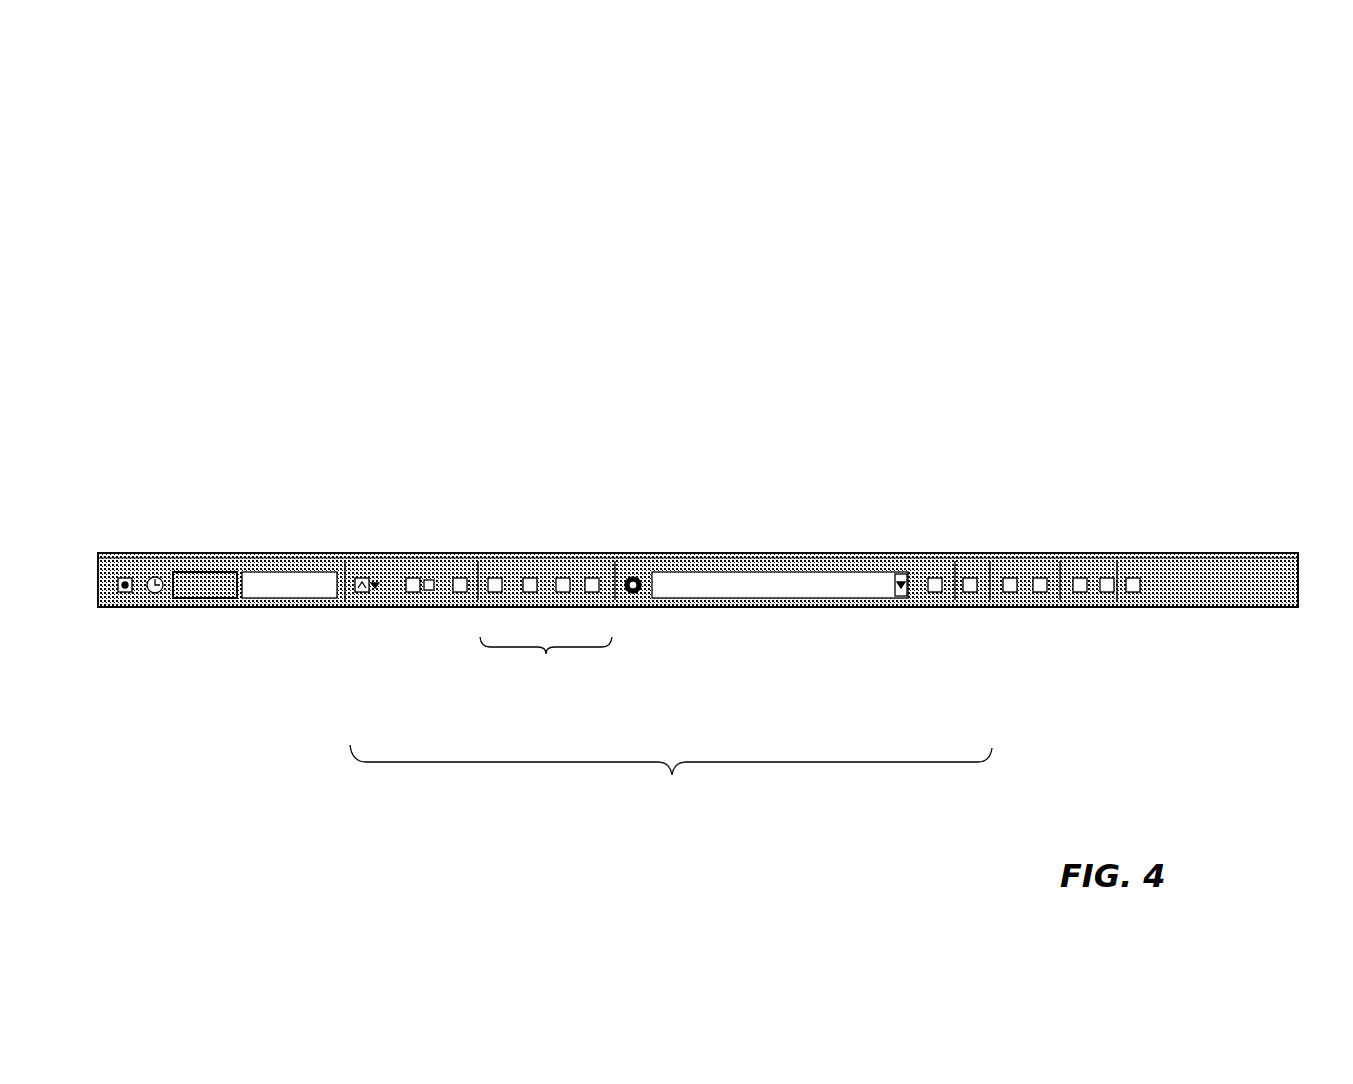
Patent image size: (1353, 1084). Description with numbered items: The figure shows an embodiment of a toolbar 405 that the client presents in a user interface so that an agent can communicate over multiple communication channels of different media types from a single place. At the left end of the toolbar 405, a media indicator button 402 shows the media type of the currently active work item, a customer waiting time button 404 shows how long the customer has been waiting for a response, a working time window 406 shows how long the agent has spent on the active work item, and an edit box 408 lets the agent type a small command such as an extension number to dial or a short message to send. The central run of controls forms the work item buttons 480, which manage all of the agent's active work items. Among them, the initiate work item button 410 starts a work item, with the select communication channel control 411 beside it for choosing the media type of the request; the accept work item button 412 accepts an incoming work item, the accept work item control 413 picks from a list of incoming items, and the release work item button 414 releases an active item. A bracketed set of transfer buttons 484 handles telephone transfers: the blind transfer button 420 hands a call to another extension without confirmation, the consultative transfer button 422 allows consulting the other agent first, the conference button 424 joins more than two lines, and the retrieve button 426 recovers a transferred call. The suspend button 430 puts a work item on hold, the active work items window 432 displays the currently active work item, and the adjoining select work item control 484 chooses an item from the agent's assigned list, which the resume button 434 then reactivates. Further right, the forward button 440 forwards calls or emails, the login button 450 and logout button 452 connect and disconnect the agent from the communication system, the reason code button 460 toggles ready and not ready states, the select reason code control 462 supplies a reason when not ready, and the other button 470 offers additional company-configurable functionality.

The media indicator button 402 is at (122, 575).
The customer waiting time button 404 is at (218, 731).
The toolbar 405 is at (690, 136).
The working time window 406 is at (203, 575).
The edit box 408 is at (336, 709).
The initiate work item button 410 is at (354, 552).
The select communication channel control 411 is at (371, 556).
The accept work item button 412 is at (412, 608).
The accept work item control 413 is at (428, 553).
The release work item button 414 is at (457, 553).
The blind transfer button 420 is at (497, 553).
The consultative transfer button 422 is at (525, 553).
The conference button 424 is at (567, 553).
The retrieve button 426 is at (610, 553).
The suspend button 430 is at (648, 553).
The active work items window 432 is at (790, 578).
The resume button 434 is at (950, 608).
The forward button 440 is at (952, 553).
The login button 450 is at (1002, 553).
The logout button 452 is at (1035, 553).
The reason code button 460 is at (1077, 553).
The select reason code control 462 is at (1105, 553).
The other button 470 is at (1223, 552).
The work item buttons 480 is at (691, 879).
The transfer buttons / select work item control 484 is at (888, 608).